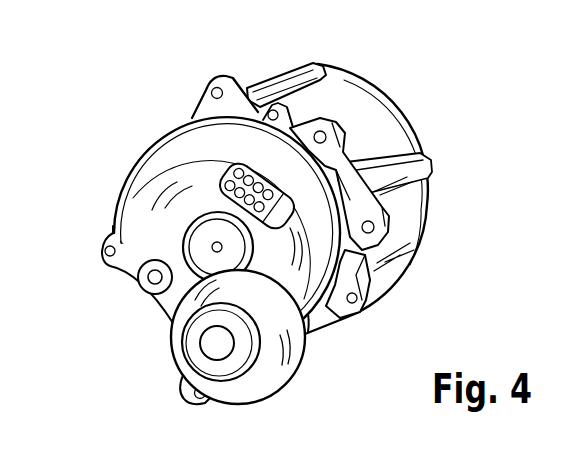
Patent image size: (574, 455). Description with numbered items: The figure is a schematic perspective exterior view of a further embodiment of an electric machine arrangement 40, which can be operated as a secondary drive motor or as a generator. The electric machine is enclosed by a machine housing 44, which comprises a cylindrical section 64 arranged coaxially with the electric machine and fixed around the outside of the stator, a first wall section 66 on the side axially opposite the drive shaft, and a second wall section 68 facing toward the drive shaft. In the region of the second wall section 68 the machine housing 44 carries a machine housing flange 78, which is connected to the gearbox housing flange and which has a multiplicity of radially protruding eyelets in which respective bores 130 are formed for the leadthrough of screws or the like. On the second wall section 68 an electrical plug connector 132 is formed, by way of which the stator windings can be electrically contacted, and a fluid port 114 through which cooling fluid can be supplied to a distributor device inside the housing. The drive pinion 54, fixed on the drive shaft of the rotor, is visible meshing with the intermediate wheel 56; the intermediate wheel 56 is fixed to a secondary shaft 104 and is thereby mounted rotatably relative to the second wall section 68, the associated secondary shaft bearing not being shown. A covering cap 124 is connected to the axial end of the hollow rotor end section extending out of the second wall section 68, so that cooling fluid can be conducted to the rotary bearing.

The electric machine arrangement 40 is at (440, 113).
The machine housing 44 is at (431, 207).
The drive pinion 54 is at (200, 212).
The intermediate wheel 56 is at (262, 384).
The cylindrical section 64 is at (327, 175).
The first wall section 66 is at (380, 102).
The second wall section 68 is at (187, 150).
The machine housing flange 78 is at (241, 80).
The secondary shaft 104 is at (193, 346).
The fluid port 114 is at (153, 280).
The covering cap 124 is at (200, 249).
The bores 130 is at (212, 95).
The plug connector 132 is at (218, 176).